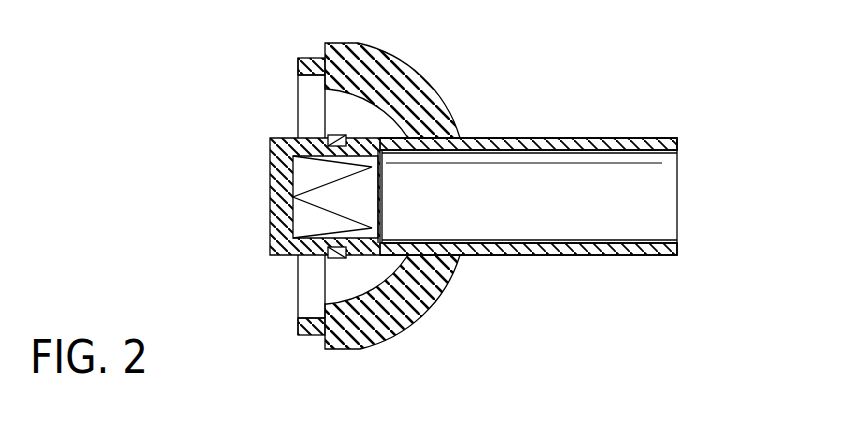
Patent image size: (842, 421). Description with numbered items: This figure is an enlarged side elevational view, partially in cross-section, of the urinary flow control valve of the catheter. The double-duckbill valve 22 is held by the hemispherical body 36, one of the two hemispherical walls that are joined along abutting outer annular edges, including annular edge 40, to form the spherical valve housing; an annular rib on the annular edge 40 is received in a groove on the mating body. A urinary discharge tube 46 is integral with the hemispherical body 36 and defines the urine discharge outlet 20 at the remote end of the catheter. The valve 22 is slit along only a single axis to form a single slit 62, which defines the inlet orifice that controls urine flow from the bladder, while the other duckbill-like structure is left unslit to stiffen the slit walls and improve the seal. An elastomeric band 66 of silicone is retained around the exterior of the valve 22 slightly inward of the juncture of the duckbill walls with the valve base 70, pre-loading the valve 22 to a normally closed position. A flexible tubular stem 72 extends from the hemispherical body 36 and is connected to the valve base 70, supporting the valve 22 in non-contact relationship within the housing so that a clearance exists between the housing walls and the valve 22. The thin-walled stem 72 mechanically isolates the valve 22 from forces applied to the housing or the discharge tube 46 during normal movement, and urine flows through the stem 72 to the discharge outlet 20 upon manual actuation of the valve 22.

The urine discharge outlet 20 is at (677, 208).
The double-duckbill valve 22 is at (368, 135).
The hemispherical body 36 is at (422, 313).
The annular edge 40 is at (325, 338).
The urinary discharge tube 46 is at (582, 138).
The slit 62 is at (280, 203).
The elastomeric band 66 is at (335, 137).
The valve base 70 is at (358, 256).
The flexible tubular stem 72 is at (392, 248).